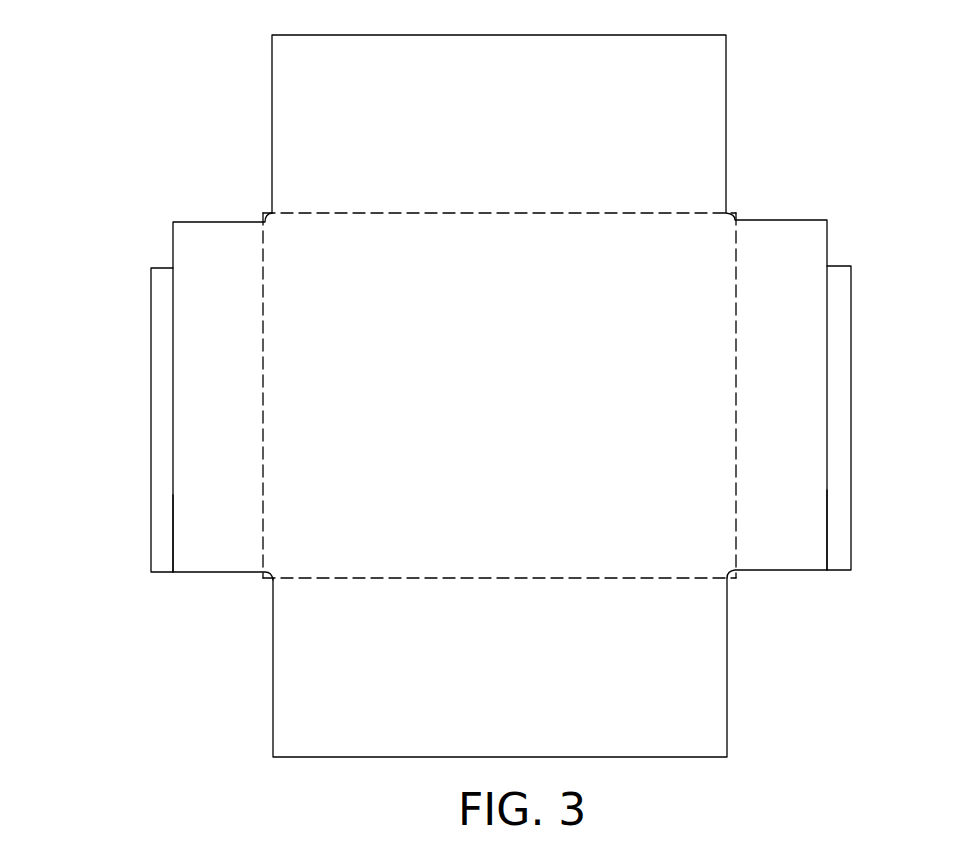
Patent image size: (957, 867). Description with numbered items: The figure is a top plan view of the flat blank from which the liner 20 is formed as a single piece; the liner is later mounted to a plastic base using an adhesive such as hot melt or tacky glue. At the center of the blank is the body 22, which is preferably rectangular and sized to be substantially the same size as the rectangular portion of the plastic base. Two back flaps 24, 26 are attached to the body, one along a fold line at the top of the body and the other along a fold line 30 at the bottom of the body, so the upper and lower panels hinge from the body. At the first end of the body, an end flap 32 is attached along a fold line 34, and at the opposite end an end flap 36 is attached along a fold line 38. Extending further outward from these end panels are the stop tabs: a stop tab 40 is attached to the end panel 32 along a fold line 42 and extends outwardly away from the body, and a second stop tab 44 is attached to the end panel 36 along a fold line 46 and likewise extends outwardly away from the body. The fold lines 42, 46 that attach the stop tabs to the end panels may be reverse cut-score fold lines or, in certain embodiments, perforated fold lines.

The liner 20 is at (165, 147).
The body 22 is at (498, 426).
The back flap 24 is at (496, 123).
The back flap 26 is at (509, 678).
The fold line 30 is at (597, 578).
The end flap 32 is at (227, 430).
The fold line 34 is at (264, 305).
The end flap 36 is at (791, 428).
The fold line 38 is at (740, 264).
The stop tab 40 is at (158, 305).
The fold line 42 is at (173, 504).
The second stop tab 44 is at (843, 520).
The fold line 46 is at (827, 498).